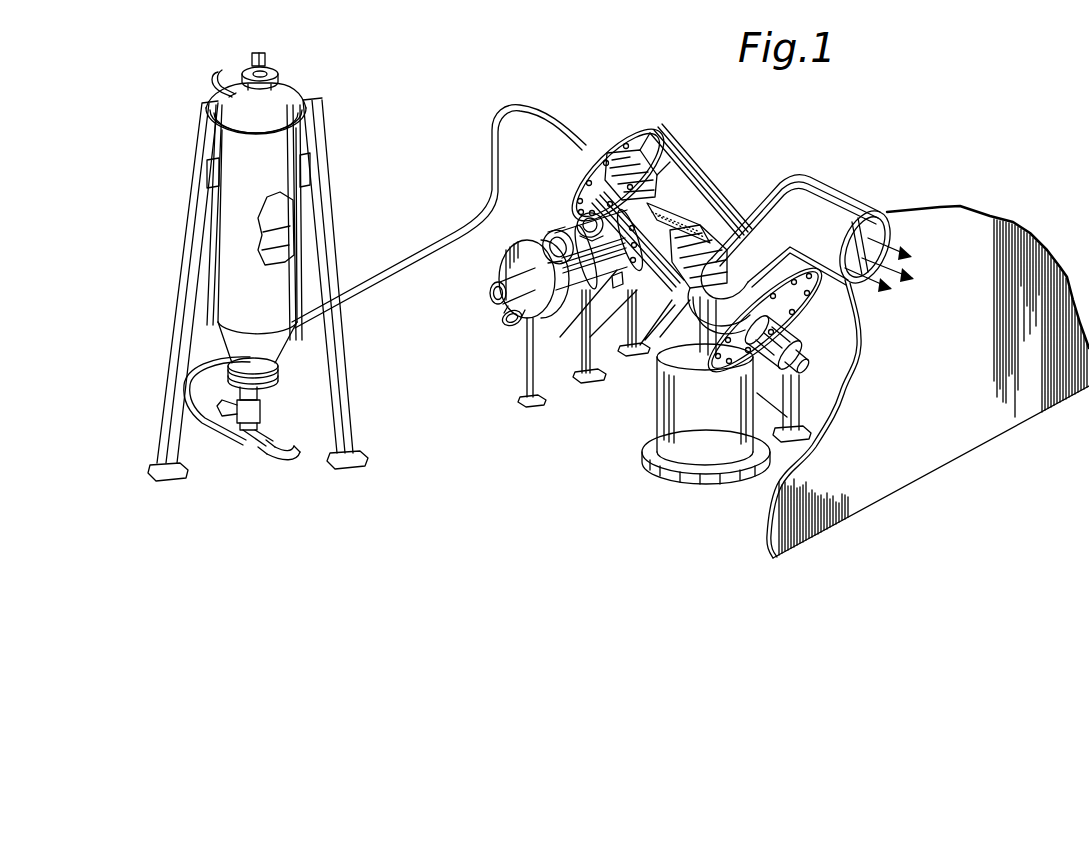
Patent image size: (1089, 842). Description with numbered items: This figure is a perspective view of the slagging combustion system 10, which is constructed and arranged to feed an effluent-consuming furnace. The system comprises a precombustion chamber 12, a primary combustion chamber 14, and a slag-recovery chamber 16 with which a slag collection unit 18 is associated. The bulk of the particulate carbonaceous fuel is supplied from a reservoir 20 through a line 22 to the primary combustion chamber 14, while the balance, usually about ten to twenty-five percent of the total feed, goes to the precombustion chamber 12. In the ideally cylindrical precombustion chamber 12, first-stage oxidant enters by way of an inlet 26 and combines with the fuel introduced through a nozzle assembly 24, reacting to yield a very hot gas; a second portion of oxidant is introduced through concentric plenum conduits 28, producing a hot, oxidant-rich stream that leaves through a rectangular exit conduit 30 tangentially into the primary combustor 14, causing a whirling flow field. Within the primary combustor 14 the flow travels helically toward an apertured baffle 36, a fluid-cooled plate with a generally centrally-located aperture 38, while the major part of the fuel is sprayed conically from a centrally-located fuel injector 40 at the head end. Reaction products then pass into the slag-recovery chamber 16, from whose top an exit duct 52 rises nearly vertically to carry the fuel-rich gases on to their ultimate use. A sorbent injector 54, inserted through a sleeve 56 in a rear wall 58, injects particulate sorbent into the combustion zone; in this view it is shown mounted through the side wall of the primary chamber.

The slagging combustion system 10 is at (710, 188).
The precombustion chamber 12 is at (547, 251).
The primary combustion chamber 14 is at (726, 224).
The slag-recovery chamber 16 is at (657, 373).
The slag collection unit 18 is at (655, 430).
The reservoir 20 is at (240, 297).
The line 22 is at (497, 117).
The nozzle assembly 24 is at (506, 283).
The inlet 26 is at (555, 236).
The concentric plenum conduits 28 is at (583, 219).
The rectangular exit conduit 30 is at (652, 210).
The apertured baffle 36 is at (733, 276).
The aperture 38 is at (640, 358).
The fuel injector 40 is at (612, 165).
The exit duct 52 is at (832, 206).
The sorbent injector 54 is at (803, 351).
The sleeve 56 is at (780, 306).
The rear wall 58 is at (787, 288).